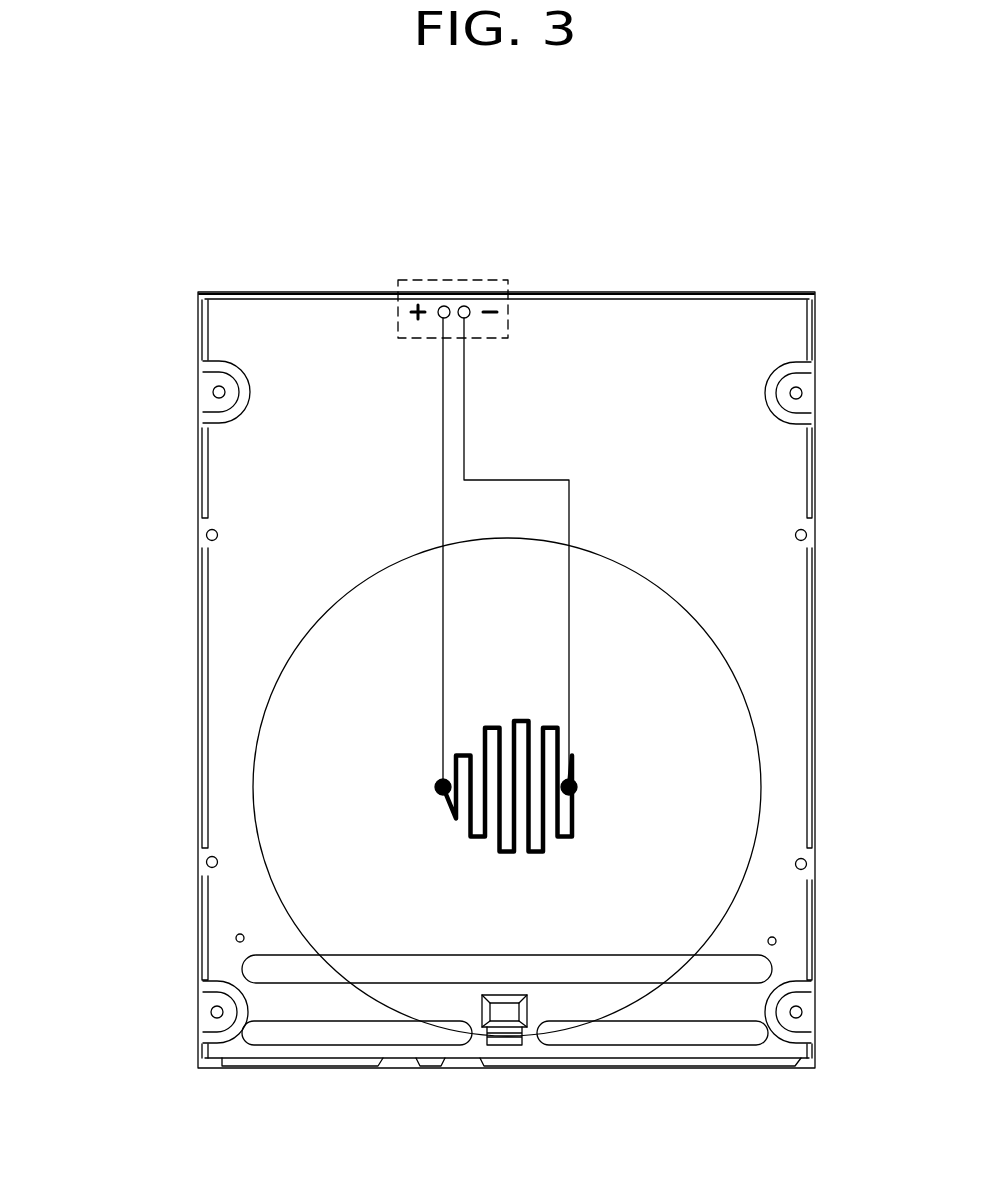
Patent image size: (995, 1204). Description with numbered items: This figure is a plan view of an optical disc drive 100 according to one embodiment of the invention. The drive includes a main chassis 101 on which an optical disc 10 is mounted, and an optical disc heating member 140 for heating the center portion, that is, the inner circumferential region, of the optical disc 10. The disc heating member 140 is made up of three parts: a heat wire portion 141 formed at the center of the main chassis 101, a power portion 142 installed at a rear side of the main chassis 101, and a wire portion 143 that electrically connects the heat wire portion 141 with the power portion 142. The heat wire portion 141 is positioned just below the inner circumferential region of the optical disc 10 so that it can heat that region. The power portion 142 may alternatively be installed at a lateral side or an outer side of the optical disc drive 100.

The optical disc drive 100 is at (160, 258).
The main chassis 101 is at (815, 466).
The optical disc 10 is at (705, 632).
The optical disc heating member 140 is at (103, 325).
The heat wire portion 141 is at (443, 787).
The power portion 142 is at (398, 328).
The wire portion 143 is at (443, 413).